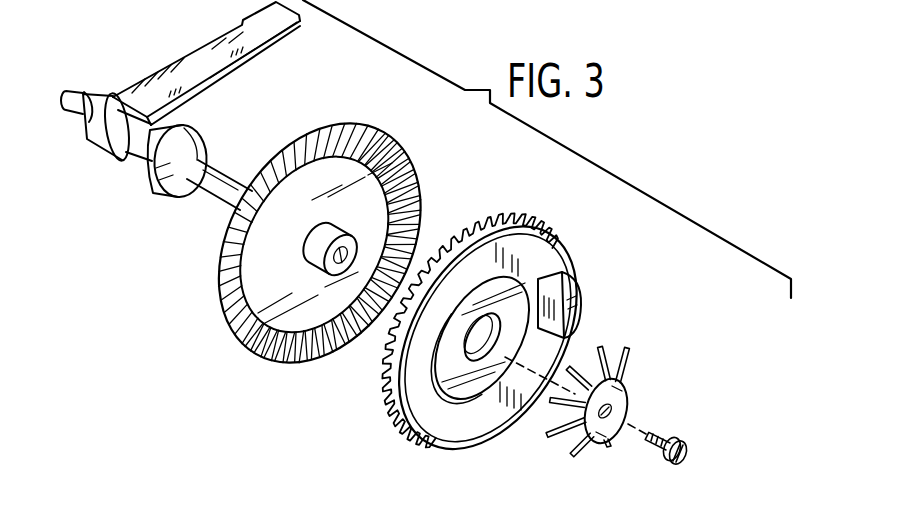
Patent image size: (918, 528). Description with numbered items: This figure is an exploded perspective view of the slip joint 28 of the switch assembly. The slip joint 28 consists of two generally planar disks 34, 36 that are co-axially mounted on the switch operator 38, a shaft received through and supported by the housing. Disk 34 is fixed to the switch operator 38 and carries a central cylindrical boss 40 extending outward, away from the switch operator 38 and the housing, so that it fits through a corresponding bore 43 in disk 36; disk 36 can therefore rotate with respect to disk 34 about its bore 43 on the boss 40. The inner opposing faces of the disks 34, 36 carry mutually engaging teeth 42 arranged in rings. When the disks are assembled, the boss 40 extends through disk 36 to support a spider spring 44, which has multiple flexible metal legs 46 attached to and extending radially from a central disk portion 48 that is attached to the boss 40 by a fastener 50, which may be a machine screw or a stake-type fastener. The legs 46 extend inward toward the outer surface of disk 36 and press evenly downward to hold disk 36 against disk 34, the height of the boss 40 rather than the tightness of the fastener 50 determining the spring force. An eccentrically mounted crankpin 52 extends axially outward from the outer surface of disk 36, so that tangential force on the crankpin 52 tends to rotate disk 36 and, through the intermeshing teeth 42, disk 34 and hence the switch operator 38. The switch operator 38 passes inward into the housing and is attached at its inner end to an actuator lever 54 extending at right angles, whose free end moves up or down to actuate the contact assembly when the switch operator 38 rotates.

The slip joint 28 is at (446, 147).
The disk 34 is at (377, 127).
The disk 36 is at (540, 224).
The switch operator 38 is at (224, 172).
The central cylindrical boss 40 is at (342, 226).
The teeth 42 is at (372, 352).
The bore 43 is at (508, 348).
The spider spring 44 is at (630, 400).
The flexible metal legs 46 is at (627, 349).
The central disk portion 48 is at (571, 454).
The fastener 50 is at (668, 438).
The crankpin 52 is at (572, 280).
The actuator lever 54 is at (170, 72).